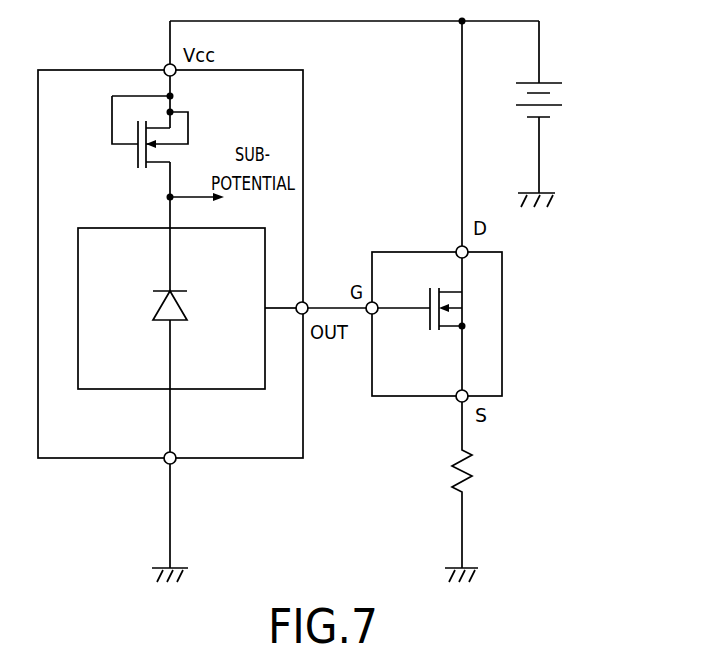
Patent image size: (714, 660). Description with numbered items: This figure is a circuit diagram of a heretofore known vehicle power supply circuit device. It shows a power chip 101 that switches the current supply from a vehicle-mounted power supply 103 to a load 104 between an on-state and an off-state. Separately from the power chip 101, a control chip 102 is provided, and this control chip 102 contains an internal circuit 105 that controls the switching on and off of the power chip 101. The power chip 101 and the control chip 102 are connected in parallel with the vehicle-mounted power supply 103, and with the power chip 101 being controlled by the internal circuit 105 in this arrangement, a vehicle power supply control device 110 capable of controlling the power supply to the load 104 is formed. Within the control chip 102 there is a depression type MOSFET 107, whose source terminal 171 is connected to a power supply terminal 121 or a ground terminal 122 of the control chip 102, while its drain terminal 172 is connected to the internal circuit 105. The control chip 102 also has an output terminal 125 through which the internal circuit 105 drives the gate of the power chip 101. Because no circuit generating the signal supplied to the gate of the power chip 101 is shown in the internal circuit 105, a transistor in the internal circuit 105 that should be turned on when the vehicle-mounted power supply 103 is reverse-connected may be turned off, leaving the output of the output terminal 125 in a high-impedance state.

The power chip 101 is at (503, 350).
The control chip 102 is at (62, 461).
The vehicle-mounted power supply 103 is at (556, 94).
The load 104 is at (468, 468).
The internal circuit 105 is at (228, 390).
The depression type MOSFET 107 is at (112, 118).
The vehicle power supply control device 110 is at (364, 474).
The power supply terminal 121 is at (166, 66).
The ground terminal 122 is at (166, 466).
The OUT terminal 125 is at (306, 303).
The source terminal 171 is at (174, 95).
The drain terminal 172 is at (169, 183).